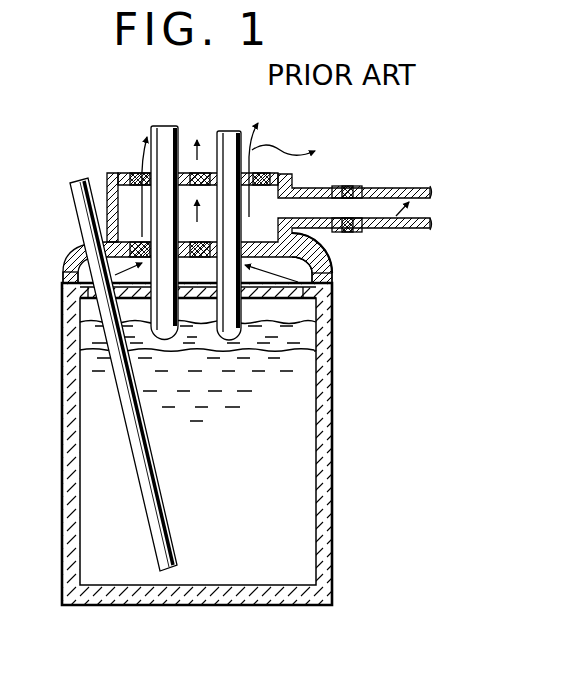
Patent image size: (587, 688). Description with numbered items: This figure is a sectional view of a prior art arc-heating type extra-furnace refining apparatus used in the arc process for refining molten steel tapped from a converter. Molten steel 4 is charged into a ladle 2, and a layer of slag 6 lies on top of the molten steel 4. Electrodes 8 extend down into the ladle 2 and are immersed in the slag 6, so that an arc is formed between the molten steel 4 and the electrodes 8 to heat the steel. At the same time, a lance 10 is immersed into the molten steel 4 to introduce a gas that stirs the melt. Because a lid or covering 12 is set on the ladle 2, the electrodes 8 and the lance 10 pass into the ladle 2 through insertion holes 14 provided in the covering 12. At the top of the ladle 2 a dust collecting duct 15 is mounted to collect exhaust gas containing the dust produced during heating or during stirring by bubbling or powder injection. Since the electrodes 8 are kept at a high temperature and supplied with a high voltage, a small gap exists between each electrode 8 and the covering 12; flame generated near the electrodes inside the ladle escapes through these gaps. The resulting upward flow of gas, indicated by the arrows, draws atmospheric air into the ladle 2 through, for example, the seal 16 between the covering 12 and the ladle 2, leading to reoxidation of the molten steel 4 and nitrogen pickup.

The ladle 2 is at (333, 425).
The molten steel 4 is at (303, 528).
The slag 6 is at (310, 345).
The electrodes 8 is at (216, 134).
The lance 10 is at (162, 502).
The covering 12 is at (325, 250).
The insertion holes 14 is at (143, 257).
The dust collecting duct 15 is at (107, 173).
The seal 16 is at (324, 280).